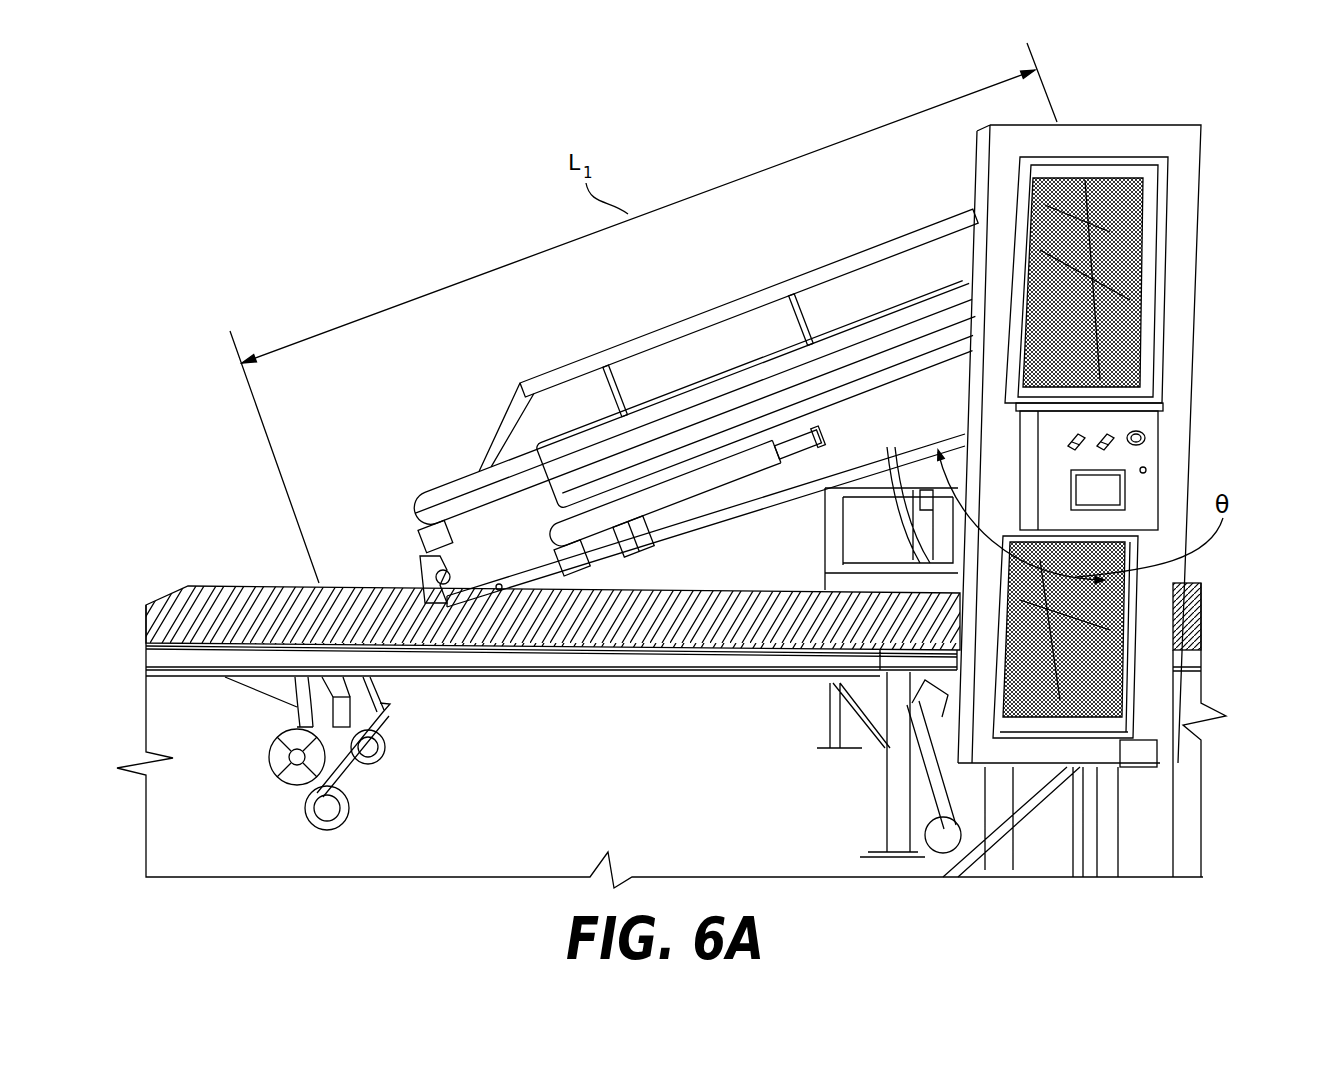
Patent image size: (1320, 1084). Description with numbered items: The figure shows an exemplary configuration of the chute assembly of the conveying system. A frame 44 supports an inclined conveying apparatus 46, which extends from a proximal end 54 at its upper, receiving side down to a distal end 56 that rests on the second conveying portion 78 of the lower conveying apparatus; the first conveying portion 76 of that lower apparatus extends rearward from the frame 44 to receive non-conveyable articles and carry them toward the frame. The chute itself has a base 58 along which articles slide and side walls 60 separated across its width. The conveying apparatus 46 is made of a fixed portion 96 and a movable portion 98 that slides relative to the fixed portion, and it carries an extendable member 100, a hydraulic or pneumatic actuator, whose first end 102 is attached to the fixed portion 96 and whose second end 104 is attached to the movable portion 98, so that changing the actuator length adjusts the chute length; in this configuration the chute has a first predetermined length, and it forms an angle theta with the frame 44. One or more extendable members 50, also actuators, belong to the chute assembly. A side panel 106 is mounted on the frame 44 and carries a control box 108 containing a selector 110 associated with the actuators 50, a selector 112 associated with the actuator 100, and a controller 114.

The frame 44 is at (1098, 862).
The conveying apparatus 46 is at (875, 428).
The extendable member 50 is at (900, 500).
The proximal end 54 is at (1112, 246).
The distal end 56 is at (403, 545).
The base 58 is at (720, 530).
The side walls 60 is at (843, 418).
The first conveying portion 76 is at (1196, 629).
The second conveying portion 78 is at (600, 668).
The fixed portion 96 is at (713, 425).
The movable portion 98 is at (447, 487).
The extendable member 100 is at (623, 512).
The first end 102 is at (816, 425).
The second end 104 is at (444, 555).
The side panel 106 is at (1182, 288).
The control box 108 is at (1142, 490).
The selector 110 is at (1075, 432).
The selector 112 is at (1105, 430).
The controller 114 is at (1082, 502).